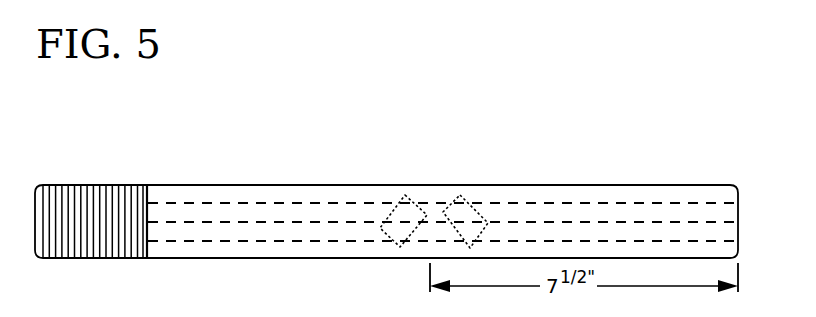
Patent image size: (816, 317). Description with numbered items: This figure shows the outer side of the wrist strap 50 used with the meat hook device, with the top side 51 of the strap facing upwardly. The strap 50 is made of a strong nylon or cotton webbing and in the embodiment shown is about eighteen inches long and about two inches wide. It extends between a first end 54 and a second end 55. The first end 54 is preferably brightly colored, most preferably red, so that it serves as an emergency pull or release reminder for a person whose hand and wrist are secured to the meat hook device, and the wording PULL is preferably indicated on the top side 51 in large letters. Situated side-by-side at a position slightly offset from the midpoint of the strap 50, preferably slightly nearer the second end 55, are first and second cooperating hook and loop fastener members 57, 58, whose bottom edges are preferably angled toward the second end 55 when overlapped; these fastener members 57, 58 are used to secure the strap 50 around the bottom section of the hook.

The wrist strap 50 is at (315, 185).
The top side 51 is at (220, 212).
The first end 54 is at (35, 186).
The second end 55 is at (696, 212).
The first hook and loop fastener member 57 is at (412, 212).
The second hook and loop fastener member 58 is at (463, 197).